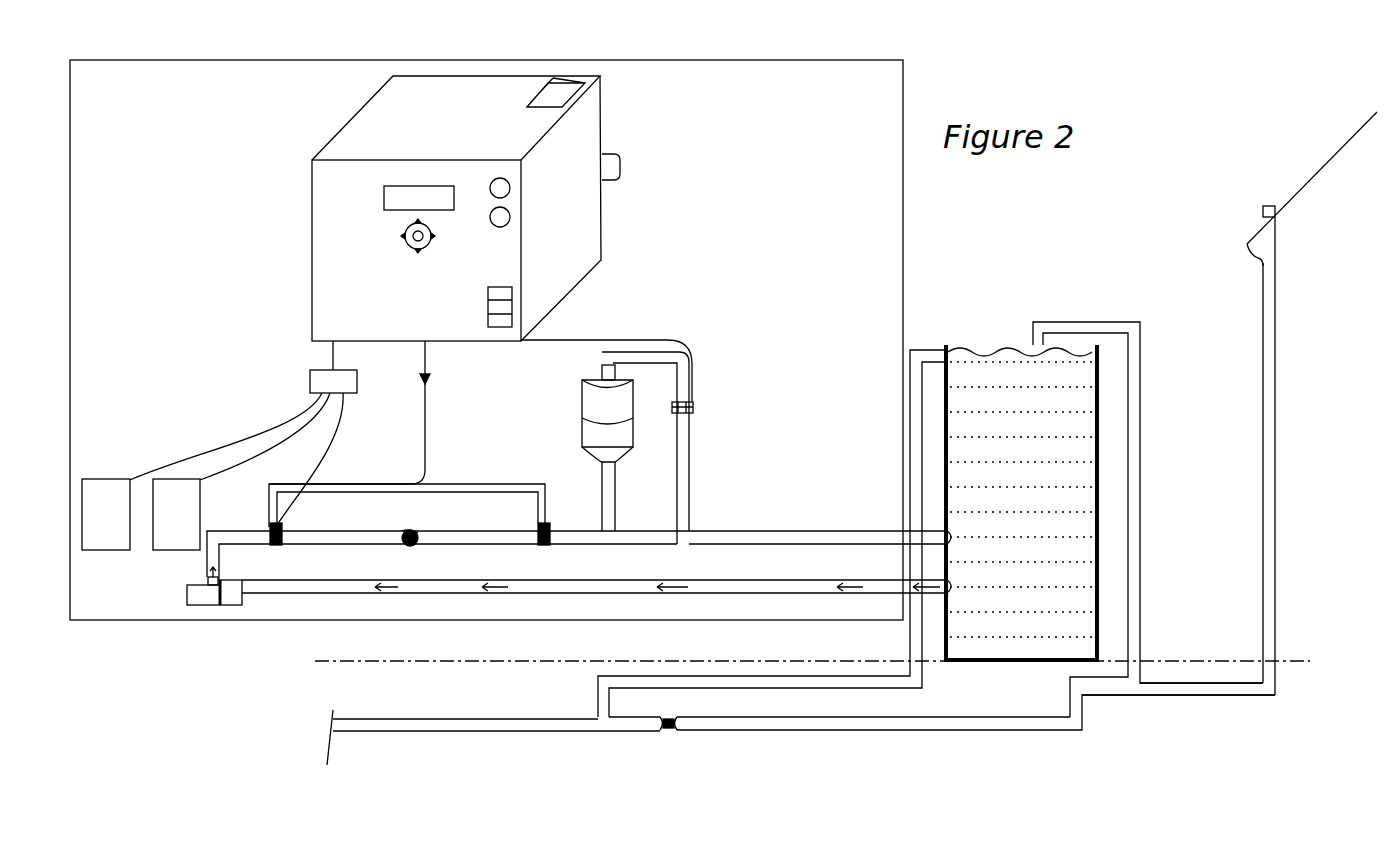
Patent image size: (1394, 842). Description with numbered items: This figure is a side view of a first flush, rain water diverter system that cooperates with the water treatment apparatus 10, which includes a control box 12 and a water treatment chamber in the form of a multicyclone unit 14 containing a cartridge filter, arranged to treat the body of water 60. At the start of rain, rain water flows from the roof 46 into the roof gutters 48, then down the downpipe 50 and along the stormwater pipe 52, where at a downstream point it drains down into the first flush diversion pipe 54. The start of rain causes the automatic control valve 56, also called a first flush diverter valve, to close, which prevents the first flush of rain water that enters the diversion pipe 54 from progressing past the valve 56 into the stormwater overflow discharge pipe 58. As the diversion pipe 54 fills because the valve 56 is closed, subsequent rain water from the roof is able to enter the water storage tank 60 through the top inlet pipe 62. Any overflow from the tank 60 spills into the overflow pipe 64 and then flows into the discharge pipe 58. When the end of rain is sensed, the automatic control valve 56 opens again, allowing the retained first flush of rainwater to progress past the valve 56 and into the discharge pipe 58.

The water treatment apparatus 10 is at (906, 63).
The control box 12 is at (312, 246).
The multicyclone unit 14 is at (580, 408).
The roof 46 is at (1312, 180).
The roof gutters 48 is at (1240, 243).
The downpipe 50 is at (1263, 385).
The stormwater pipe 52 is at (1190, 698).
The first flush diversion pipe 54 is at (947, 732).
The automatic control valve 56 is at (668, 733).
The stormwater overflow discharge pipe 58 is at (447, 733).
The water storage tank 60 is at (1099, 470).
The top inlet pipe 62 is at (1088, 322).
The overflow pipe 64 is at (928, 349).